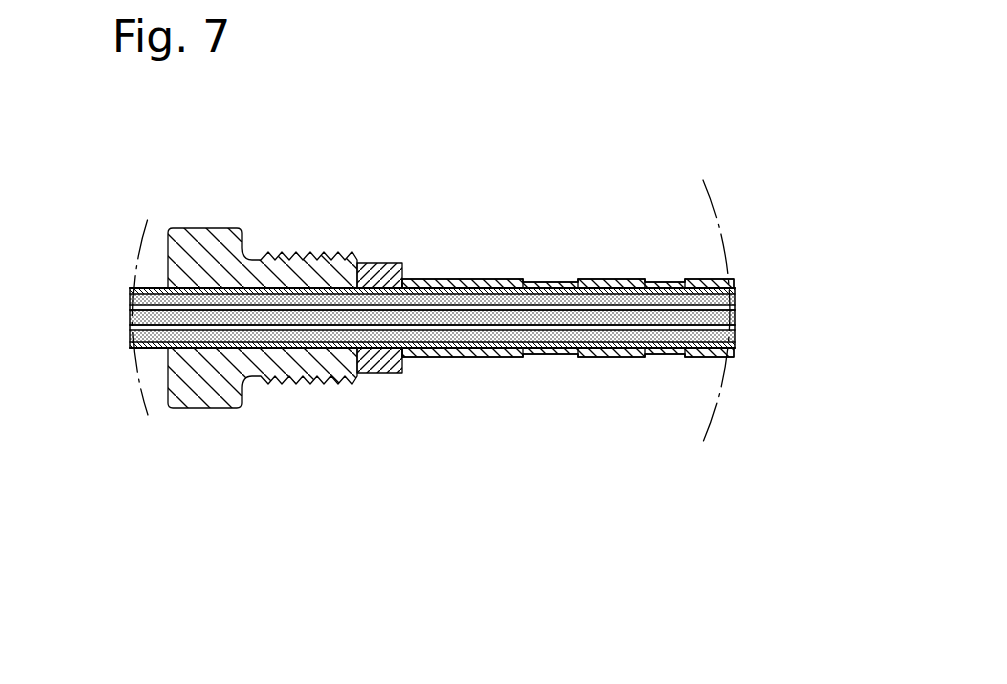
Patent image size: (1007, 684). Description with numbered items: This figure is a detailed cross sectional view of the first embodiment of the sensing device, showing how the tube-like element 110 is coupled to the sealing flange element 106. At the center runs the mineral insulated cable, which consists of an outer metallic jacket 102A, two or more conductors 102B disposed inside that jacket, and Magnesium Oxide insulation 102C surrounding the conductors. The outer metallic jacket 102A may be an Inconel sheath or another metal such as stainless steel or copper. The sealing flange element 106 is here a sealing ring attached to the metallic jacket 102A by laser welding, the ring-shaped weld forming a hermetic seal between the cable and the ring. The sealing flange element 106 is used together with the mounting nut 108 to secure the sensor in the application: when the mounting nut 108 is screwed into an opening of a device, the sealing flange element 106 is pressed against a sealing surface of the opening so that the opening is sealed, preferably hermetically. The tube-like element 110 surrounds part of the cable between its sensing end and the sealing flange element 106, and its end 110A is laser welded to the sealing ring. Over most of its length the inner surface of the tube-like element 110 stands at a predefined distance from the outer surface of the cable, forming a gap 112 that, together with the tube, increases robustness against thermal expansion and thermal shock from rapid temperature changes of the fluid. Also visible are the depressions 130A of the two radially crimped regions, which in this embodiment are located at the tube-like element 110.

The outer metallic jacket 102A is at (735, 292).
The conductors 102B is at (735, 329).
The Magnesium Oxide insulation 102C is at (130, 338).
The sealing flange element 106 is at (365, 263).
The mounting nut 108 is at (218, 243).
The tube-like element 110 is at (608, 280).
The end of the tube-like element 110A is at (402, 278).
The gap 112 is at (466, 358).
The depressions 130A is at (664, 272).